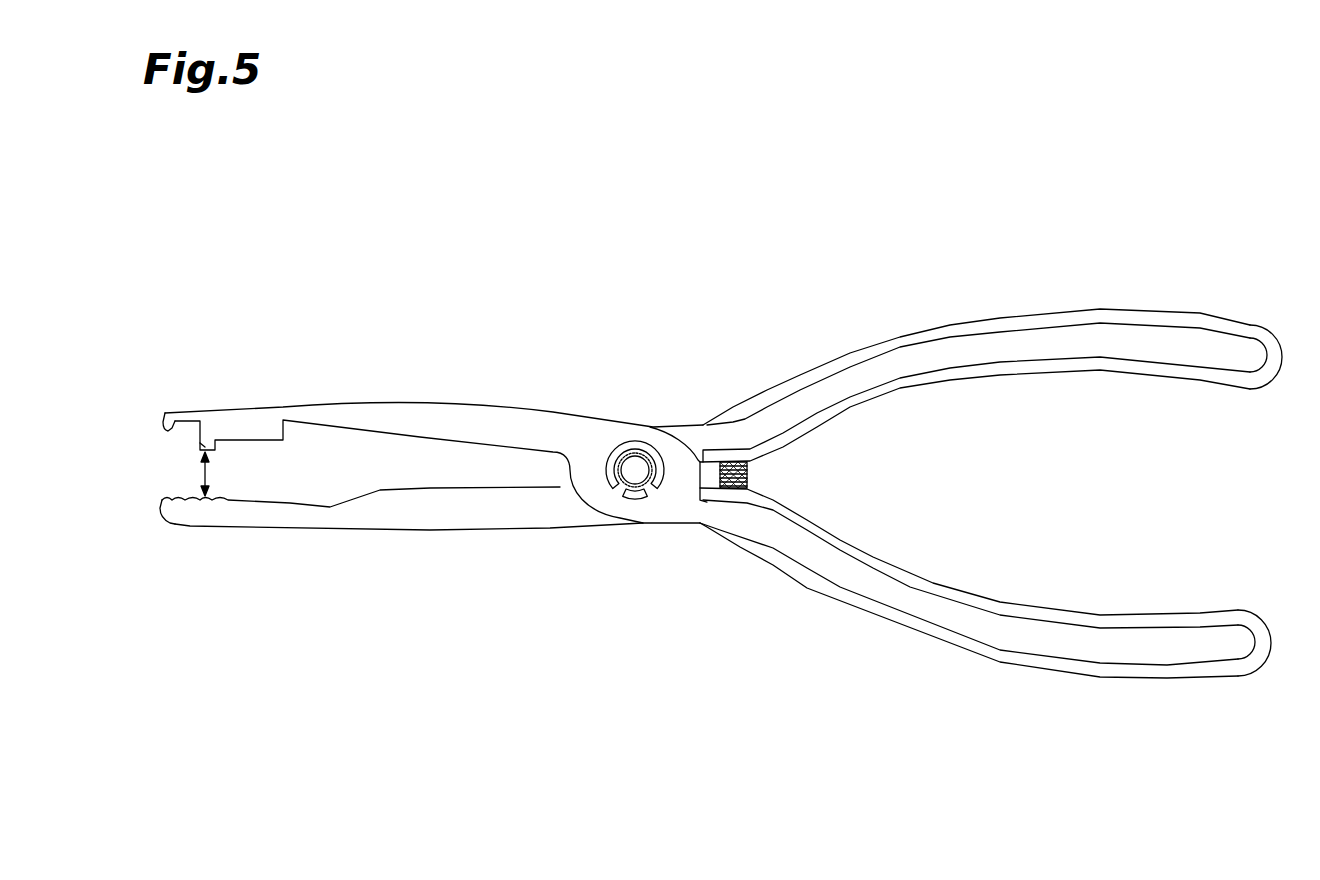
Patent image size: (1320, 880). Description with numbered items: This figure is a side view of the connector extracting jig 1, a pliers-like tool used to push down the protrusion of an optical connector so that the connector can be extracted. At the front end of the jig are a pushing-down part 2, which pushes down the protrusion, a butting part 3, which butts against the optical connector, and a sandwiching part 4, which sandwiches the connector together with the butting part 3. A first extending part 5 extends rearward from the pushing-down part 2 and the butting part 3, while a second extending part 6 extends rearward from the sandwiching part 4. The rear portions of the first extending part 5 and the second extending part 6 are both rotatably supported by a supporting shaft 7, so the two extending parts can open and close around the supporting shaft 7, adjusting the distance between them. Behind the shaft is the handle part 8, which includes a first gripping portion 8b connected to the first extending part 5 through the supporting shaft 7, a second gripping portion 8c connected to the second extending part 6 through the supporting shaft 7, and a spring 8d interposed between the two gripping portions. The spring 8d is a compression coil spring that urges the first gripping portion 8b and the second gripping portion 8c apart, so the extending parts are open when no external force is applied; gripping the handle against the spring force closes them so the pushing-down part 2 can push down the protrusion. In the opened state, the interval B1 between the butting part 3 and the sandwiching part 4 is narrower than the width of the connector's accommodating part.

The connector extracting jig 1 is at (1106, 192).
The pushing-down part 2 is at (167, 426).
The butting part 3 is at (197, 443).
The sandwiching part 4 is at (178, 513).
The first extending part 5 is at (473, 412).
The second extending part 6 is at (476, 518).
The supporting shaft 7 is at (633, 466).
The handle part 8 is at (1200, 324).
The first gripping portion 8b is at (1215, 648).
The second gripping portion 8c is at (1242, 353).
The spring 8d is at (750, 478).
The interval between the butting part and the sandwiching part B1 is at (225, 474).